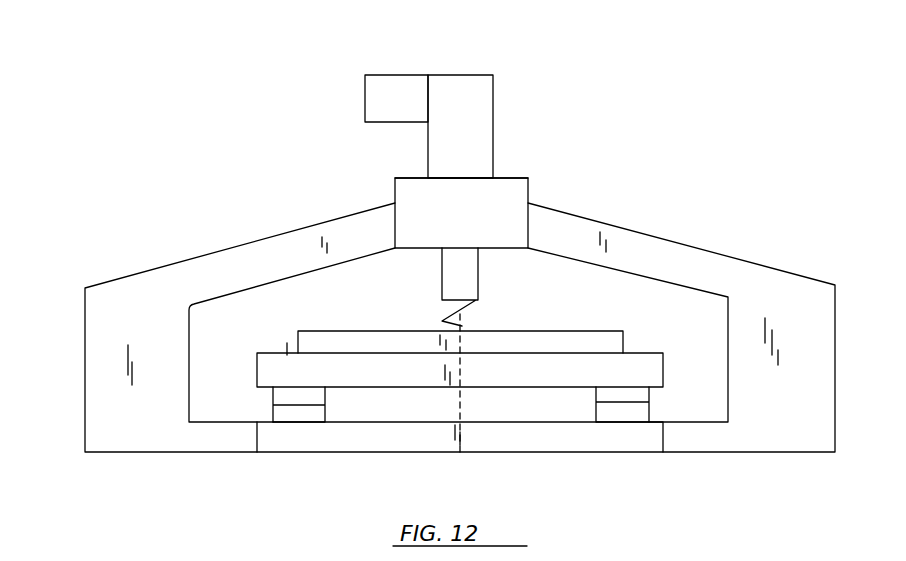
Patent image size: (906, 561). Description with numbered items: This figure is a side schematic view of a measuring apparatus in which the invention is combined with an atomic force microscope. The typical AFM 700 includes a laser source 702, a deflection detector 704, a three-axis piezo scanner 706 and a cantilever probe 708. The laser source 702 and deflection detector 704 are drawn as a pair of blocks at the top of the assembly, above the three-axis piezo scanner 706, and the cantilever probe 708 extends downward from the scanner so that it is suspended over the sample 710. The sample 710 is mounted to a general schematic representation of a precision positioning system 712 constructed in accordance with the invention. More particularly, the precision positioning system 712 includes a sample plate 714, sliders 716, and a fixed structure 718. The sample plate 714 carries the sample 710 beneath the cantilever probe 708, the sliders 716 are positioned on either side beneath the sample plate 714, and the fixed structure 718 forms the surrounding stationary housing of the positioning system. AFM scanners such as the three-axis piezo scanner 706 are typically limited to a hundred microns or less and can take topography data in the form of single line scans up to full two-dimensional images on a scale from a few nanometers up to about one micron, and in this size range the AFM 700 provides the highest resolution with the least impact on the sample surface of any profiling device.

The AFM 700 is at (507, 65).
The laser source 702 is at (475, 120).
The deflection detector 704 is at (377, 100).
The three-axis piezo scanner 706 is at (508, 198).
The cantilever probe 708 is at (472, 285).
The sample 710 is at (373, 310).
The precision positioning system 712 is at (653, 340).
The sample plate 714 is at (272, 367).
The sliders 716 is at (270, 397).
The fixed structure 718 is at (125, 372).